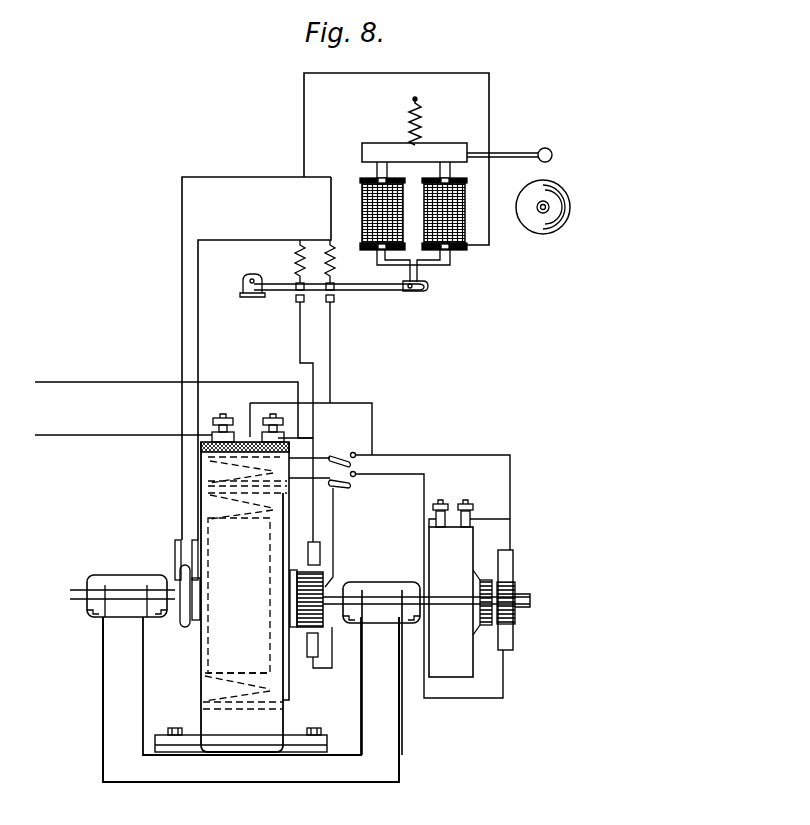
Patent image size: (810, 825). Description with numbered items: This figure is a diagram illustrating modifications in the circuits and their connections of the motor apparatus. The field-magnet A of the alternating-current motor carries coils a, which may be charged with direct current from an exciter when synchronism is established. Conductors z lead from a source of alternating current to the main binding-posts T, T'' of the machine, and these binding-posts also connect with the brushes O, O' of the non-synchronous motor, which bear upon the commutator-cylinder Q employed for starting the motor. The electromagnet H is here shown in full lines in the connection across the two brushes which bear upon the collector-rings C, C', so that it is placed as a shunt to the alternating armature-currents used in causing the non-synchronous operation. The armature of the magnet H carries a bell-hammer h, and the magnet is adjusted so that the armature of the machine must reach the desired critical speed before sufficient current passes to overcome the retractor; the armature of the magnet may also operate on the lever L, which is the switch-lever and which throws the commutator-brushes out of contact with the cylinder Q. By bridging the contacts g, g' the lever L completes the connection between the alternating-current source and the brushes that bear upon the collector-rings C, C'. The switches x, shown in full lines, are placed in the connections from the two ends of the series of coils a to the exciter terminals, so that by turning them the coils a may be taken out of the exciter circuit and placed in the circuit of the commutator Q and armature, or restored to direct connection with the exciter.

The conductor z is at (123, 424).
The electromagnet H is at (360, 212).
The bell-hammer h is at (509, 144).
The lever L is at (389, 290).
The contacts g is at (313, 298).
The contact g' is at (315, 308).
The main binding-post T is at (223, 418).
The terminal T'' is at (291, 428).
The field-magnet A is at (213, 652).
The coils a is at (247, 487).
The collector-ring C is at (170, 607).
The collector-ring C' is at (210, 607).
The switch x is at (338, 511).
The brush O' is at (339, 550).
The brush O is at (313, 659).
The commutator-cylinder Q is at (320, 628).